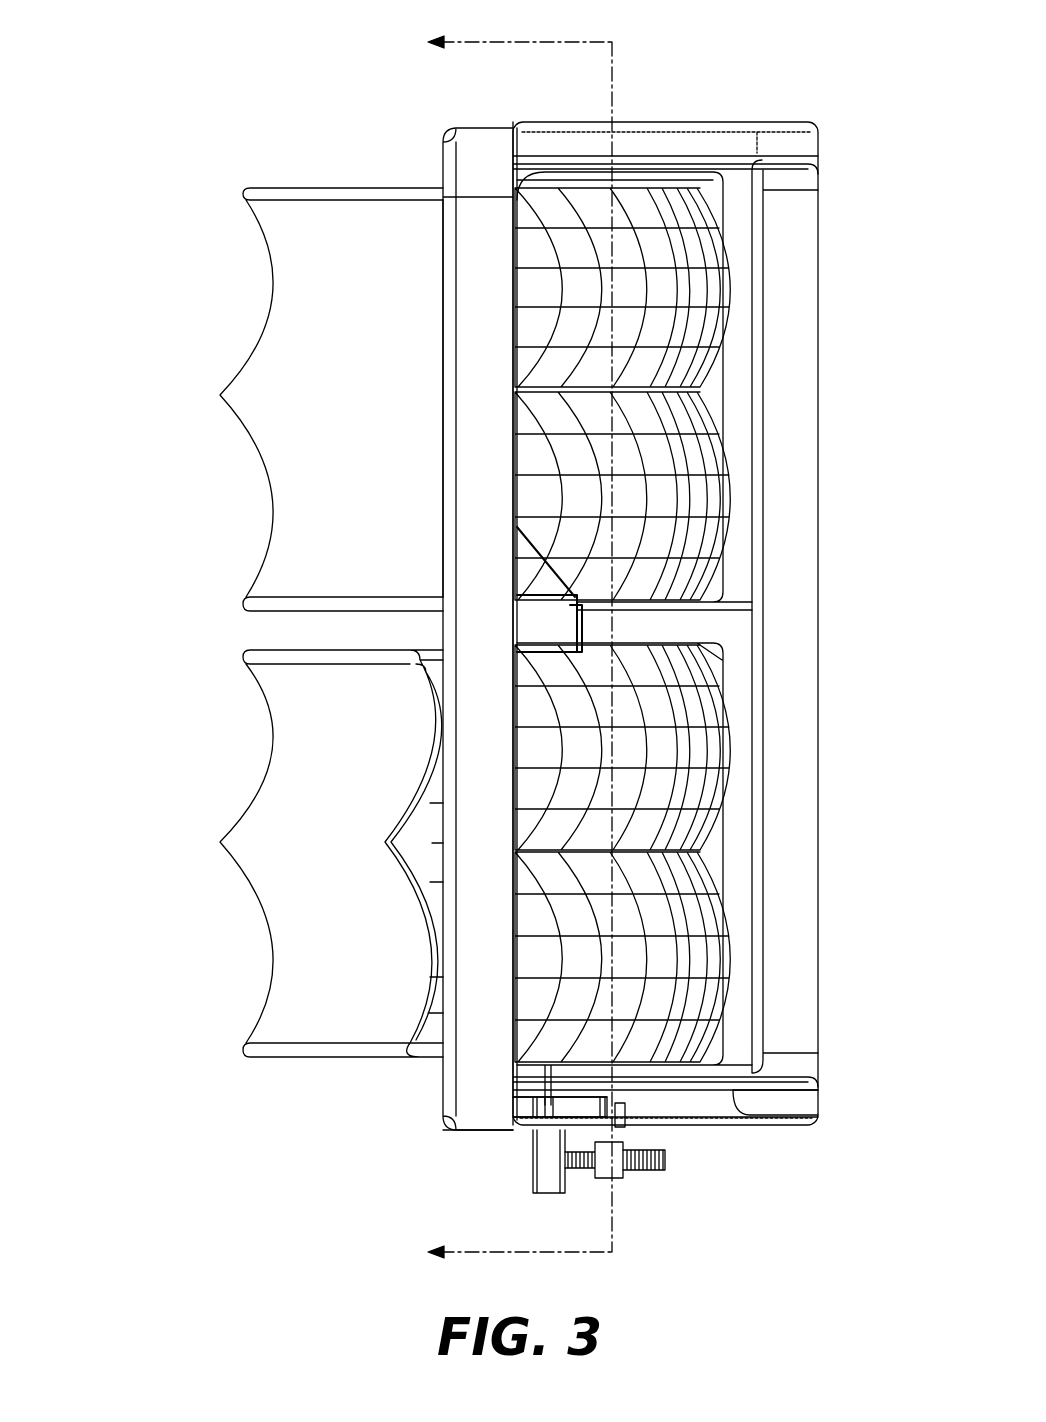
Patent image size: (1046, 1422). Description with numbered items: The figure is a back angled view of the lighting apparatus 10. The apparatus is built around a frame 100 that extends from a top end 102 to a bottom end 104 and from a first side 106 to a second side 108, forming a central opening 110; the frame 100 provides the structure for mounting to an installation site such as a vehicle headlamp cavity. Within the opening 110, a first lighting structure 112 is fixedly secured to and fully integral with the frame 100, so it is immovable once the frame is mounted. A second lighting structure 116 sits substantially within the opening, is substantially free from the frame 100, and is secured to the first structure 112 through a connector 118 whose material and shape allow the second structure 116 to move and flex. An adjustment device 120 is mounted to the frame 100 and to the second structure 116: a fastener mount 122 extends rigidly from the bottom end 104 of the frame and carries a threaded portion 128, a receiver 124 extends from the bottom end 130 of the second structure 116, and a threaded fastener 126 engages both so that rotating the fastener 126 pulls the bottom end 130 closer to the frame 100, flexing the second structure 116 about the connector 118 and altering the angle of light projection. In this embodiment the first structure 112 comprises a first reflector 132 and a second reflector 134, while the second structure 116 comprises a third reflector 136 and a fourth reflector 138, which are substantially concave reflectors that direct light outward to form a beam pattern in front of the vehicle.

The lighting apparatus 10 is at (150, 70).
The frame 100 is at (445, 160).
The top end 102 is at (697, 92).
The bottom end 104 is at (790, 1182).
The first side 106 is at (835, 347).
The second side 108 is at (425, 463).
The central opening 110 is at (708, 640).
The first lighting structure 112 is at (210, 322).
The second lighting structure 116 is at (210, 777).
The connector 118 is at (547, 628).
The adjustment device 120 is at (578, 1198).
The fastener mount 122 is at (620, 1137).
The receiver 124 is at (535, 1165).
The threaded fastener 126 is at (640, 1165).
The threaded portion 128 is at (605, 1173).
The bottom end 130 is at (335, 1105).
The first reflector 132 is at (720, 287).
The second reflector 134 is at (720, 497).
The third reflector 136 is at (725, 730).
The fourth reflector 138 is at (725, 935).